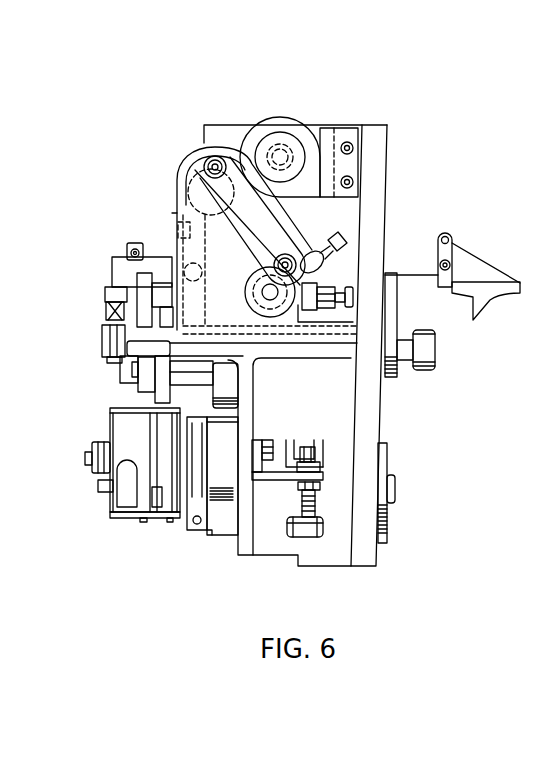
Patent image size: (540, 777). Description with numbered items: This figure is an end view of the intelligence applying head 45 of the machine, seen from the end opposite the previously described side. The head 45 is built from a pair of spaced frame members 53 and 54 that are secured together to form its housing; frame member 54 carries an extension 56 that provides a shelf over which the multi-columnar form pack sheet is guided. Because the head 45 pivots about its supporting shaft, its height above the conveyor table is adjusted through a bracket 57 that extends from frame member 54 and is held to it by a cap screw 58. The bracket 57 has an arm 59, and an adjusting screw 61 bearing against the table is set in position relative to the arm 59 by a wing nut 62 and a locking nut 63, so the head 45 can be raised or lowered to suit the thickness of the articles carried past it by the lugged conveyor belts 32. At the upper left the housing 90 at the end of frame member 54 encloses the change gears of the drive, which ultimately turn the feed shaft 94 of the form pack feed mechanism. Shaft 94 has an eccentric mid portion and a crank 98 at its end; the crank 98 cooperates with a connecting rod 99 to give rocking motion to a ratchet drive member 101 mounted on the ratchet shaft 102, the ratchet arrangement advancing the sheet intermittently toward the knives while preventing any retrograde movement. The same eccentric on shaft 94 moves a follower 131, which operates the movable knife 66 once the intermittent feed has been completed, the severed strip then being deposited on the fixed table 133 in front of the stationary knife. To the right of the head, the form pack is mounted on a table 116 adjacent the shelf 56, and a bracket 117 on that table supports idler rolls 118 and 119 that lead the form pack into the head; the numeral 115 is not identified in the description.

The intelligence applying head 45 is at (391, 116).
The frame member 53 is at (390, 150).
The frame member 54 is at (208, 130).
The extension 56 is at (250, 368).
The bracket 57 is at (284, 442).
The cap screw 58 is at (267, 440).
The arm 59 is at (323, 476).
The adjusting screw 61 is at (316, 506).
The wing nut 62 is at (326, 446).
The locking nut 63 is at (310, 488).
The movable knife 66 is at (110, 286).
The housing 90 is at (274, 117).
The shaft 94 is at (193, 175).
The crank 98 is at (218, 158).
The connecting rod 99 is at (272, 218).
The ratchet drive member 101 is at (213, 281).
The ratchet shaft 102 is at (296, 257).
The post 115 is at (410, 272).
The table 116 is at (495, 286).
The bracket 117 is at (455, 252).
The idler roll 118 is at (447, 233).
The idler roll 119 is at (440, 275).
The follower 131 is at (177, 210).
The fixed table 133 is at (103, 331).
The conveyor belts 32 is at (181, 240).